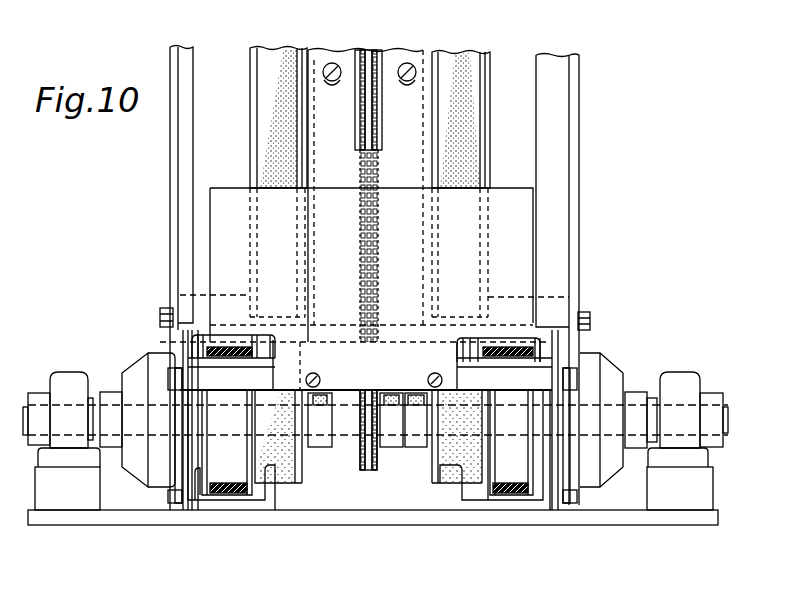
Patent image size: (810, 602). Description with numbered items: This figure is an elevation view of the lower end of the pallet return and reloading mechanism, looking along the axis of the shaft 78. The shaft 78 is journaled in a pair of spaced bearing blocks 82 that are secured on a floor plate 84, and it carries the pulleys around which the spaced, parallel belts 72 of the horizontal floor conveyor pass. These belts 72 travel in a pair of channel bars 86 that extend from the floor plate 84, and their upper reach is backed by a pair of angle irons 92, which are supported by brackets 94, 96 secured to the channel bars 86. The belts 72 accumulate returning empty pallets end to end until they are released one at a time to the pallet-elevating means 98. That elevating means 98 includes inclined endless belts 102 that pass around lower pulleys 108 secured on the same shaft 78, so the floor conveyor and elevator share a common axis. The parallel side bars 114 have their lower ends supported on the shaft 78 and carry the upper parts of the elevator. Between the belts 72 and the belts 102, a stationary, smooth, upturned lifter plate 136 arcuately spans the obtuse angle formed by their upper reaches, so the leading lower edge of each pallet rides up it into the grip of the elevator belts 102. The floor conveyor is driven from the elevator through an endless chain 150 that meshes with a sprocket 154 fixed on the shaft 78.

The belts 72 is at (232, 497).
The shaft 78 is at (728, 418).
The bearing blocks 82 is at (70, 372).
The floor plate 84 is at (112, 520).
The channel bars 86 is at (280, 502).
The angle irons 92 is at (263, 357).
The bracket 94 is at (183, 355).
The bracket 96 is at (555, 355).
The pallet-elevating means 98 is at (617, 214).
The inclined endless belts 102 is at (277, 53).
The lower pulleys 108 is at (305, 462).
The side bars 114 is at (175, 122).
The lifter plate 136 is at (223, 195).
The endless chain 150 is at (377, 132).
The sprocket 154 is at (380, 472).